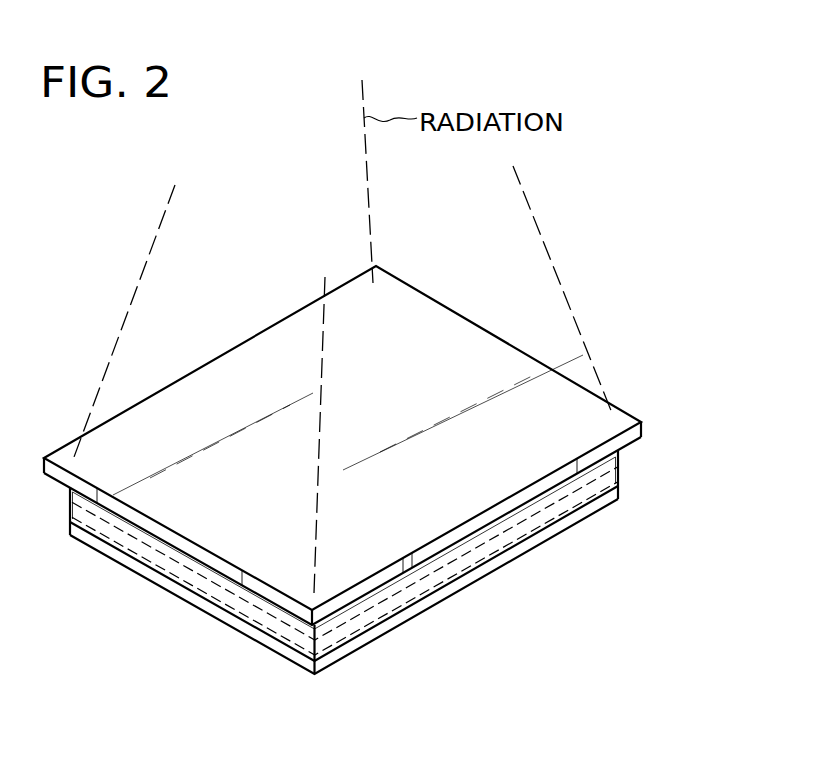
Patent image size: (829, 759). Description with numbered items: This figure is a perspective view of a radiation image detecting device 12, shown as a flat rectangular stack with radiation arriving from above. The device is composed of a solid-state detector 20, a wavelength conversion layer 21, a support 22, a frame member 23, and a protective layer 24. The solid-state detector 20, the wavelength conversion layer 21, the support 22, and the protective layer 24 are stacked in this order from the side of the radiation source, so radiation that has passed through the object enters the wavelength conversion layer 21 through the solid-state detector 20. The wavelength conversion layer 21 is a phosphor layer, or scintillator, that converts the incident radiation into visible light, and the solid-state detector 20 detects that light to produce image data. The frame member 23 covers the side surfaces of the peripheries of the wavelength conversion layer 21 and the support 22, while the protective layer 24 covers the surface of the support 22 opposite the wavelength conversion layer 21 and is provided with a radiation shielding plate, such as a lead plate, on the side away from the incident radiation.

The radiation image detecting device 12 is at (625, 385).
The solid-state detector 20 is at (248, 366).
The wavelength conversion layer 21 is at (498, 527).
The support 22 is at (460, 583).
The frame member 23 is at (605, 485).
The protective layer 24 is at (390, 633).